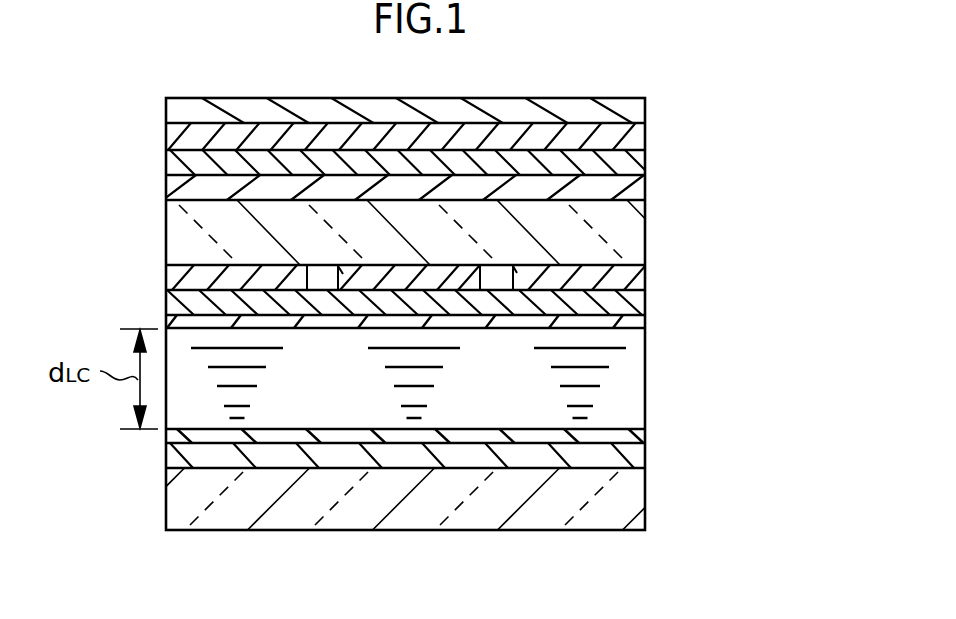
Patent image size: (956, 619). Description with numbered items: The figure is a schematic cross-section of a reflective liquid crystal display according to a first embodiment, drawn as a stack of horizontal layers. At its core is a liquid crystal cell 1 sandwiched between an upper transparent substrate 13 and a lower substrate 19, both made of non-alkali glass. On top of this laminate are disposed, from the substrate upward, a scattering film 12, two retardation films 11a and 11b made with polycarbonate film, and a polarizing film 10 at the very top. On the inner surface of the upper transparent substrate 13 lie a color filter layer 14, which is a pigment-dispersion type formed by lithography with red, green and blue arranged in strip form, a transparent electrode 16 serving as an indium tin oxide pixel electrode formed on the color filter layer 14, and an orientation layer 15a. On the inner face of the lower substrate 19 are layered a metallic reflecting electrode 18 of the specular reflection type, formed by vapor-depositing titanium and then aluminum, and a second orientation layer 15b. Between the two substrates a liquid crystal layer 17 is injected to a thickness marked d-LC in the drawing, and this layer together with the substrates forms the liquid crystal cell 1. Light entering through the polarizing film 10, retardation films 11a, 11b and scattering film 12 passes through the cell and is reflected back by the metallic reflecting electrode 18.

The liquid crystal cell 1 is at (777, 227).
The polarizing film 10 is at (645, 115).
The retardation film 11a is at (645, 133).
The retardation film 11b is at (645, 160).
The scattering film 12 is at (645, 190).
The upper transparent substrate 13 is at (645, 243).
The color filter layer 14 is at (645, 275).
The transparent electrode 16 is at (645, 303).
The orientation layer 15a is at (645, 323).
The liquid crystal layer 17 is at (645, 397).
The orientation layer 15b is at (645, 438).
The metallic reflecting electrode 18 is at (645, 457).
The lower substrate 19 is at (645, 498).